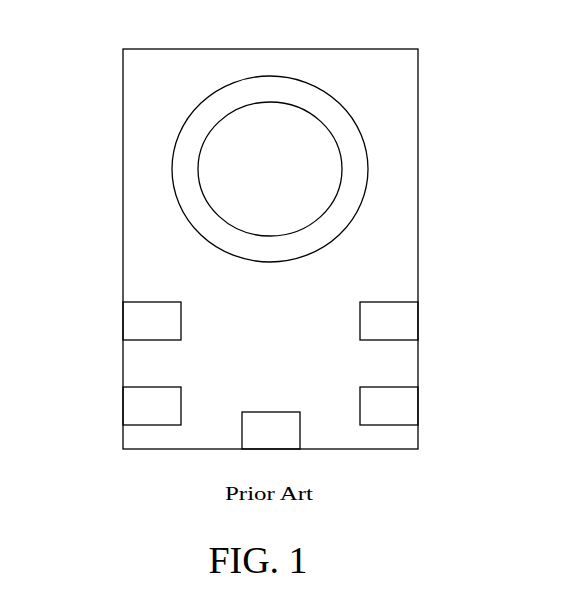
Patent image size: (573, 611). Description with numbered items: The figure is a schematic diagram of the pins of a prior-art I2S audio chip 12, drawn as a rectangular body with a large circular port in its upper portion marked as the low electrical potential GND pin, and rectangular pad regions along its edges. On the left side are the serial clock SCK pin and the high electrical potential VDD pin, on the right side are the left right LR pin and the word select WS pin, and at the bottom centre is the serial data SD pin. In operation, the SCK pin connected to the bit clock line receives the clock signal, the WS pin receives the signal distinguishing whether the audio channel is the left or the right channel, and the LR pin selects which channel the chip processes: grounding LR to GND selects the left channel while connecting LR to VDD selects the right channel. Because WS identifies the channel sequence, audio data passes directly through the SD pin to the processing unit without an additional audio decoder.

The I2S audio chip 12 is at (118, 36).
The low electrical potential GND pin GND is at (247, 169).
The serial clock (SCK) pin SCK is at (124, 321).
The high electrical potential VDD pin VDD is at (124, 406).
The left right (LR) pin LR is at (409, 321).
The word select (WS) pin WS is at (411, 406).
The serial data (SD) pin SD is at (271, 445).